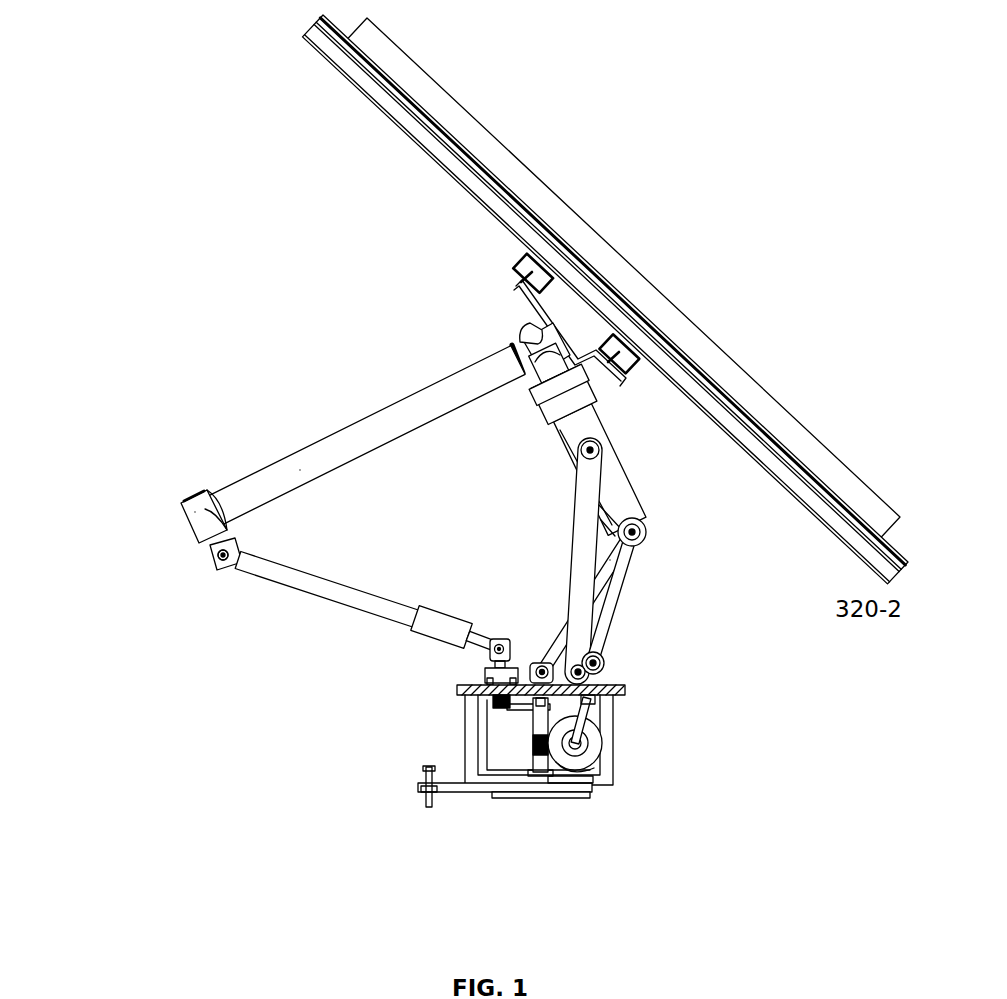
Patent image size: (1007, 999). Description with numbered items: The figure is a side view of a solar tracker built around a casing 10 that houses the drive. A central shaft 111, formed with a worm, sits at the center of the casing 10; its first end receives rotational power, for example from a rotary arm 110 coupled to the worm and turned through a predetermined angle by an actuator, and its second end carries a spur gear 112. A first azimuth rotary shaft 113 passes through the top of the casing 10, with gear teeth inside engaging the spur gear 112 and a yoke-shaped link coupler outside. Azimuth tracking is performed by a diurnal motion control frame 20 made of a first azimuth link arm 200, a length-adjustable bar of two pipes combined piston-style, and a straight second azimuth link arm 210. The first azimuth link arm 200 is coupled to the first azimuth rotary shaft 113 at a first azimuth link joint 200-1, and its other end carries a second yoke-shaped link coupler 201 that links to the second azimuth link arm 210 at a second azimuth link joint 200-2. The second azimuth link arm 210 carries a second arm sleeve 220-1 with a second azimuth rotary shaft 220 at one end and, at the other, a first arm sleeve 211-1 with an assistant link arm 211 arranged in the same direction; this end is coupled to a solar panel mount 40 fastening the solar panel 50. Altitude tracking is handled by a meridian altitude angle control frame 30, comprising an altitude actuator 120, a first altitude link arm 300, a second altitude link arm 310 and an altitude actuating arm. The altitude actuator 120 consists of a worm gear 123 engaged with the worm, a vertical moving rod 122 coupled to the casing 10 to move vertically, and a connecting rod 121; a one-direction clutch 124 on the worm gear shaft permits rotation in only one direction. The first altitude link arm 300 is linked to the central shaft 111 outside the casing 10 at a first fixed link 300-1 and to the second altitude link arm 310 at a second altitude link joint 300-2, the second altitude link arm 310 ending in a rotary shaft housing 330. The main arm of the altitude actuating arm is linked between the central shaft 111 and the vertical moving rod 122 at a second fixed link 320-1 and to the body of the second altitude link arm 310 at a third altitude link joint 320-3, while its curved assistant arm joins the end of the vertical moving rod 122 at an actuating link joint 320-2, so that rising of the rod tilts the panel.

The casing 10 is at (573, 783).
The diurnal motion control frame 20 is at (278, 415).
The meridian altitude angle control frame 30 is at (660, 518).
The solar panel mount 40 is at (512, 260).
The solar panel 50 is at (618, 192).
The rotary arm 110 is at (450, 790).
The central shaft (with worm) 111 is at (533, 748).
The spur gear 112 is at (507, 722).
The first azimuth rotary shaft 113 is at (486, 667).
The altitude actuator 120 is at (655, 758).
The connecting rod 121 is at (600, 745).
The vertical moving rod 122 is at (607, 699).
The worm gear 123 is at (586, 778).
The one-direction clutch 124 is at (588, 765).
The first azimuth link arm 200 is at (302, 595).
The first azimuth link joint 200-1 is at (497, 643).
The second azimuth link joint 200-2 is at (218, 566).
The second yoke-shaped link coupler 201 is at (230, 570).
The second azimuth link arm 210 is at (362, 430).
The assistant link arm 211 is at (200, 548).
The first arm sleeve 211-1 is at (183, 521).
The second azimuth rotary shaft 220 is at (508, 372).
The second arm sleeve 220-1 is at (508, 332).
The first altitude link arm 300 is at (645, 560).
The first fixed link 300-1 is at (540, 664).
The second altitude link joint 300-2 is at (648, 533).
The second altitude link arm 310 is at (592, 432).
The second fixed link 320-1 is at (584, 664).
The actuating link joint 320-2 is at (608, 673).
The third altitude link joint 320-3 is at (581, 455).
The rotary shaft housing 330 is at (548, 410).